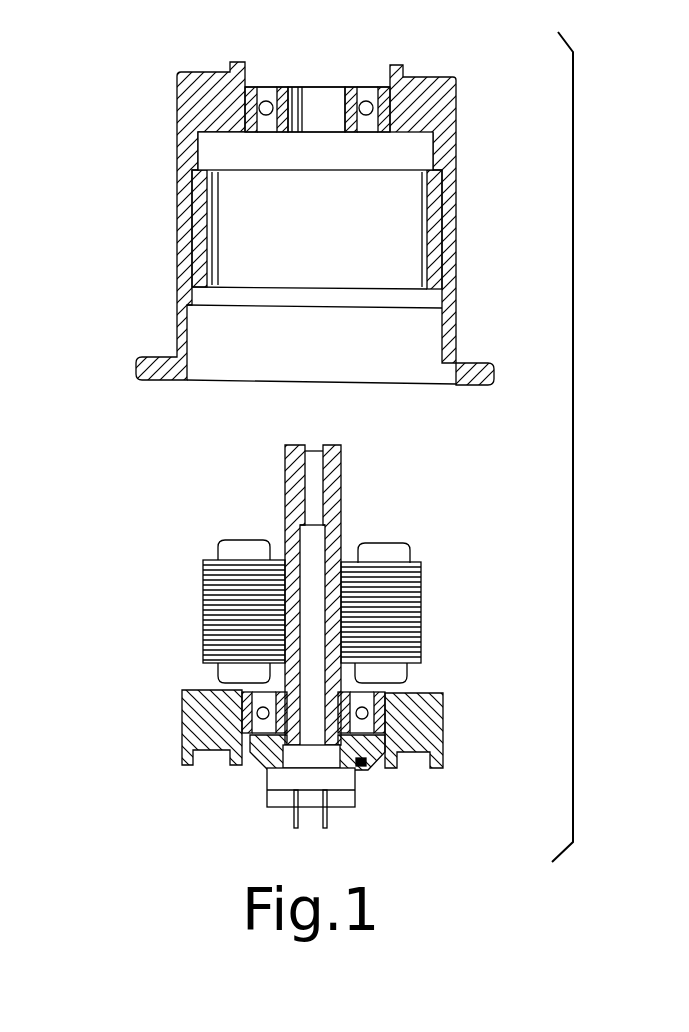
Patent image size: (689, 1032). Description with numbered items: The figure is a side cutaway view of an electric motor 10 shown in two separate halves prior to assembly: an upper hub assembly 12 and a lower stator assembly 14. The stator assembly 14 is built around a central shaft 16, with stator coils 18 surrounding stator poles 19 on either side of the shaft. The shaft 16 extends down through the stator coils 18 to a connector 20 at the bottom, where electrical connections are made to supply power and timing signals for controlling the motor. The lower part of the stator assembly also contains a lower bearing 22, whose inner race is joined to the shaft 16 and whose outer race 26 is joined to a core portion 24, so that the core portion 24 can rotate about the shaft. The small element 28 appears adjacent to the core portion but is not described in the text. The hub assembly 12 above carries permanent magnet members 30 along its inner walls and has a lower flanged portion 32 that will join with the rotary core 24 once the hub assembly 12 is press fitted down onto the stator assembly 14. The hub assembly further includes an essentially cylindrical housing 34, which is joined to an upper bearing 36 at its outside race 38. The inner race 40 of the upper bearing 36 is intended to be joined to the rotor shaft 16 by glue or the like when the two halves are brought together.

The electric motor 10 is at (92, 329).
The hub assembly 12 is at (457, 198).
The stator assembly 14 is at (422, 623).
The central shaft 16 is at (342, 530).
The stator coils 18 is at (422, 570).
The stator poles 19 is at (242, 538).
The connector 20 is at (285, 812).
The lower bearing 22 is at (393, 672).
The core portion 24 is at (443, 748).
The outer race 26 is at (420, 768).
The pin 28 is at (365, 766).
The permanent magnet members 30 is at (207, 267).
The lower flanged portion 32 is at (487, 365).
The cylindrical housing 34 is at (457, 113).
The upper bearing 36 is at (273, 86).
The outside race 38 is at (247, 133).
The inner race 40 is at (303, 94).